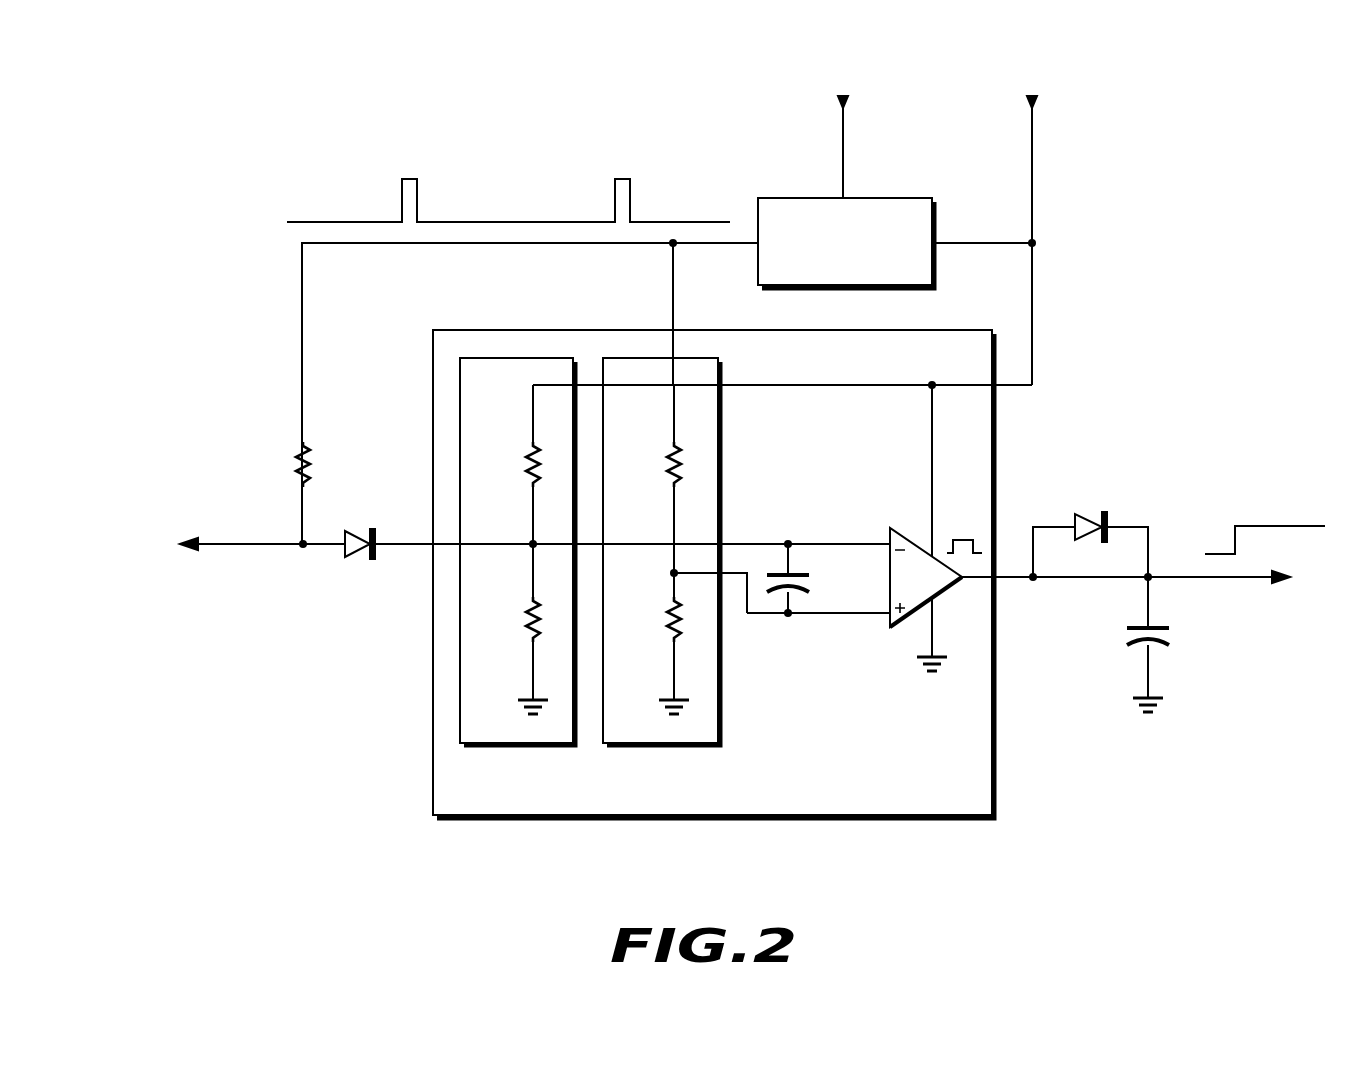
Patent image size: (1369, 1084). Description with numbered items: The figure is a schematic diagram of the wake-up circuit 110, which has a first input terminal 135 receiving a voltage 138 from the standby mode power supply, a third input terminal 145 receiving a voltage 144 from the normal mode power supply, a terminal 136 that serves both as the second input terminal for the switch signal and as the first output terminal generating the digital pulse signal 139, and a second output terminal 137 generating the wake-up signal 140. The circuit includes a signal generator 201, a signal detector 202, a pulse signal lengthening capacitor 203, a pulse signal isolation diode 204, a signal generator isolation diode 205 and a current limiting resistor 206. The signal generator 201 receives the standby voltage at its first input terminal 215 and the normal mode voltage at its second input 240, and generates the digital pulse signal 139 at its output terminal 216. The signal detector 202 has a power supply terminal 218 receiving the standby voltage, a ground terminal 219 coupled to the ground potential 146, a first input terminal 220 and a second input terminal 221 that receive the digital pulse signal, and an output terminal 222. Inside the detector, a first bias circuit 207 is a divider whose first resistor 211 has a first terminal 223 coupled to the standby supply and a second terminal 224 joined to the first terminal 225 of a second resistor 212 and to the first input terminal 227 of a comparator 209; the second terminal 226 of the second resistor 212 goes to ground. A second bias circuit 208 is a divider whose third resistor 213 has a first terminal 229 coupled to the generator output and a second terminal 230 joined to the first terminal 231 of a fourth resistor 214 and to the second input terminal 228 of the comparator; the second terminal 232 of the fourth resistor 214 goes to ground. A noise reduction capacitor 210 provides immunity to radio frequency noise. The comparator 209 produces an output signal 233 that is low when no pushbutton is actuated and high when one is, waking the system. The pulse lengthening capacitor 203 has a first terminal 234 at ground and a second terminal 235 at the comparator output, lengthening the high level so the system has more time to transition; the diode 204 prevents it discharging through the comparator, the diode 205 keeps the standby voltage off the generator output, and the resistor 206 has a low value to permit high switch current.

The wake-up circuit 110 is at (752, 487).
The first input terminal 135 is at (1032, 152).
The second input terminal / first output terminal 136 is at (243, 548).
The second output terminal 137 is at (1228, 582).
The voltage 138 is at (1074, 86).
The digital pulse signal 139 is at (510, 218).
The wake-up signal 140 is at (1272, 525).
The voltage 144 is at (889, 86).
The third input terminal 145 is at (843, 135).
The ground potential 146 is at (1135, 705).
The signal generator 201 is at (895, 197).
The signal detector 202 is at (915, 822).
The pulse signal lengthening capacitor 203 is at (1170, 645).
The pulse signal isolation diode 204 is at (1092, 512).
The signal generator isolation diode 205 is at (363, 530).
The current limiting resistor 206 is at (297, 470).
The first bias circuit 207 is at (520, 748).
The second bias circuit 208 is at (723, 703).
The comparator 209 is at (957, 588).
The noise reduction capacitor 210 is at (805, 575).
The first resistor 211 is at (528, 470).
The second resistor 212 is at (528, 630).
The third resistor 213 is at (670, 470).
The fourth resistor 214 is at (670, 630).
The first input terminal of signal generator 215 is at (935, 250).
The output terminal of signal generator 216 is at (753, 246).
The power supply terminal 218 is at (995, 392).
The ground terminal 219 is at (932, 633).
The first input terminal of signal detector 220 is at (428, 546).
The second input terminal of signal detector 221 is at (661, 321).
The output terminal of signal detector 222 is at (995, 582).
The first terminal of first resistor 223 is at (530, 420).
The second terminal of first resistor 224 is at (530, 520).
The first terminal of second resistor 225 is at (530, 582).
The second terminal of second resistor 226 is at (530, 678).
The first input terminal of comparator 227 is at (890, 530).
The second input terminal of comparator 228 is at (888, 617).
The first terminal of third resistor 229 is at (672, 420).
The second terminal of third resistor 230 is at (672, 520).
The first terminal of fourth resistor 231 is at (670, 582).
The second terminal of fourth resistor 232 is at (672, 678).
The output signal 233 is at (959, 536).
The first terminal of pulse lengthening capacitor 234 is at (1147, 670).
The second terminal of pulse lengthening capacitor 235 is at (1147, 603).
The second input of signal generator 240 is at (840, 197).